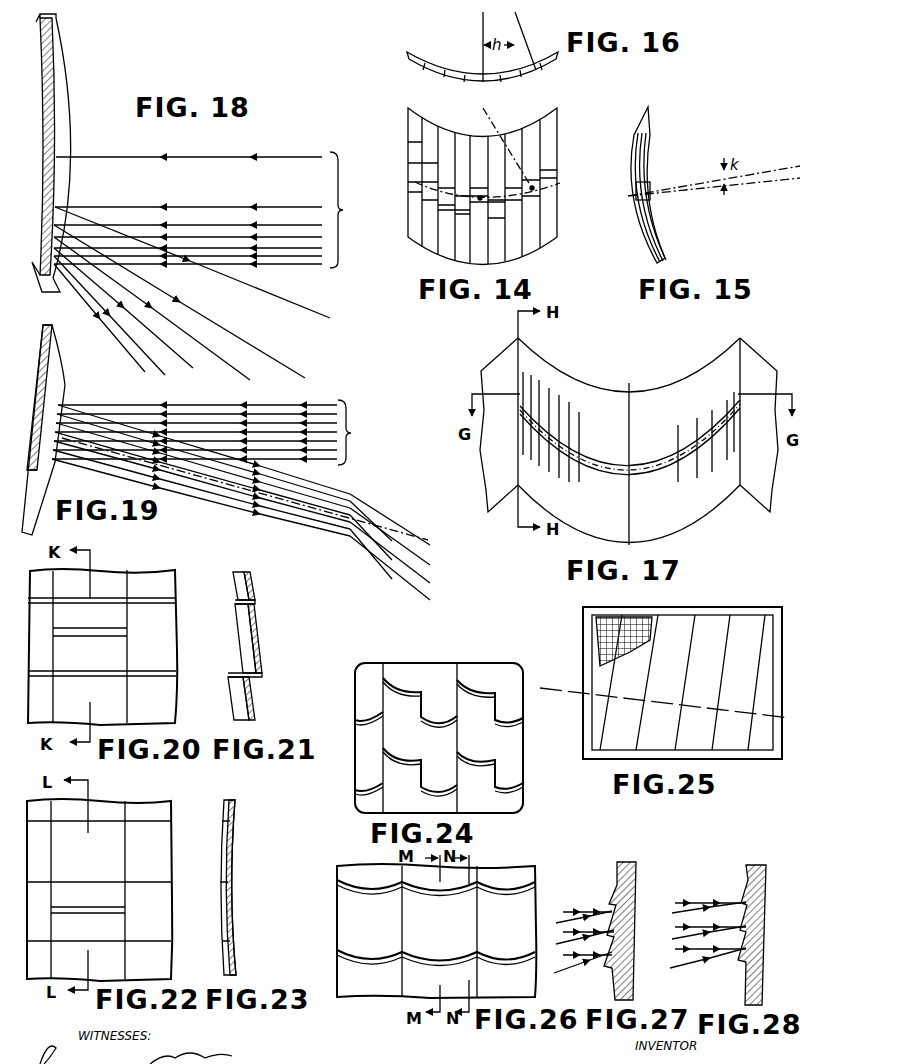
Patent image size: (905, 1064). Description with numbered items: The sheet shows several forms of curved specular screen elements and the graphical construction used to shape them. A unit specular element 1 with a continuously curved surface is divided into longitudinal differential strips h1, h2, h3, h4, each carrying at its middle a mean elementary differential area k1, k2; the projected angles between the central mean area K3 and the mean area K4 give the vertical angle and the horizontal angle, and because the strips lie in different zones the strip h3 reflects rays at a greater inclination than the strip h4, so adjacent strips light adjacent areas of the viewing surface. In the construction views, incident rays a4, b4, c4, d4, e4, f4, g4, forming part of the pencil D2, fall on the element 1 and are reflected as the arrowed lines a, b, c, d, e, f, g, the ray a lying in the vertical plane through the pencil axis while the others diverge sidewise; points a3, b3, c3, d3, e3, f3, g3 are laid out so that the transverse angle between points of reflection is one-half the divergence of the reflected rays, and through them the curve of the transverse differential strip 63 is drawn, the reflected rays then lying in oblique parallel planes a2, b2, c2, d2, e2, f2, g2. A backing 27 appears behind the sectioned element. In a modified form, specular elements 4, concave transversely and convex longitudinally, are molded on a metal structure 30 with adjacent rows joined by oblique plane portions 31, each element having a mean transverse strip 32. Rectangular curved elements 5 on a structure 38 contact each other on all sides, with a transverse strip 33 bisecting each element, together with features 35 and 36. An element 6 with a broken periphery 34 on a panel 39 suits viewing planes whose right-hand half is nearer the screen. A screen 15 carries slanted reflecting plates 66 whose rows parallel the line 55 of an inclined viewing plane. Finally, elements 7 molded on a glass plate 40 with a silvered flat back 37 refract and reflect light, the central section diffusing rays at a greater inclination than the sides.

In FIG. 18, the specular element 1 is at (68, 84).
In FIG. 19, the specular element 1 is at (66, 385).
In FIG. 16, the specular element 1 is at (430, 68).
In FIG. 14, the specular element 1 is at (420, 248).
In FIG. 15, the specular element 1 is at (650, 242).
In FIG. 17, the specular element 1 is at (700, 512).
In FIG. 25, the specular element 1 is at (636, 652).
In FIG. 18, the backing plate 27 is at (43, 126).
In FIG. 19, the transverse differential strip 63 is at (46, 452).
In FIG. 17, the transverse differential strip 63 is at (656, 472).
In FIG. 20, the metal structure 30 is at (142, 571).
In FIG. 21, the metal structure 30 is at (256, 626).
In FIG. 20, the joining portion 31 is at (88, 598).
In FIG. 20, the mean transverse differential strip 32 is at (102, 630).
In FIG. 20, the specular element 4 is at (135, 686).
In FIG. 21, the specular element 4 is at (234, 692).
In FIG. 22, the structure 38 is at (170, 808).
In FIG. 23, the structure 38 is at (237, 840).
In FIG. 22, the curved element 5 is at (99, 881).
In FIG. 23, the curved element 5 is at (225, 866).
In FIG. 22, the ridge 35 is at (80, 888).
In FIG. 22, the transverse differential strip 33 is at (92, 908).
In FIG. 22, the ridge 36 is at (84, 942).
In FIG. 24, the tile panel 39 is at (490, 663).
In FIG. 24, the step 34 is at (426, 712).
In FIG. 24, the element 6 is at (439, 737).
In FIG. 25, the screen 15 is at (715, 612).
In FIG. 25, the specularly reflecting plate 66 is at (672, 622).
In FIG. 25, the line 55 is at (563, 698).
In FIG. 26, the glass plate 40 is at (535, 880).
In FIG. 27, the glass plate 40 is at (646, 858).
In FIG. 28, the glass plate 40 is at (766, 856).
In FIG. 26, the element 7 is at (436, 917).
In FIG. 27, the element 7 is at (612, 898).
In FIG. 28, the element 7 is at (746, 896).
In FIG. 27, the back 37 is at (640, 922).
In FIG. 28, the back 37 is at (766, 922).
In FIG. 18, the pencil D2 is at (349, 210).
In FIG. 19, the pencil D2 is at (358, 432).
In FIG. 14, the longitudinal differential strip h1 is at (412, 142).
In FIG. 14, the longitudinal differential strip h2 is at (420, 163).
In FIG. 14, the longitudinal differential strip h3 is at (512, 163).
In FIG. 14, the longitudinal differential strip h4 is at (530, 142).
In FIG. 14, the differential area k1 is at (408, 182).
In FIG. 14, the differential area k2 is at (425, 193).
In FIG. 16, the central mean elementary area K3 is at (472, 76).
In FIG. 14, the central mean elementary area K3 is at (490, 212).
In FIG. 16, the mean elementary area K4 is at (533, 70).
In FIG. 14, the mean elementary area K4 is at (535, 190).
In FIG. 19, the oblique parallel plane a2 is at (252, 536).
In FIG. 19, the oblique parallel plane b2 is at (233, 521).
In FIG. 19, the oblique parallel plane c2 is at (253, 518).
In FIG. 19, the oblique parallel plane d2 is at (234, 503).
In FIG. 19, the oblique parallel plane e2 is at (254, 500).
In FIG. 19, the oblique parallel plane f2 is at (233, 485).
In FIG. 19, the oblique parallel plane g2 is at (255, 481).
In FIG. 17, the point of reflection a3 is at (628, 470).
In FIG. 17, the point of reflection b3 is at (582, 464).
In FIG. 17, the point of reflection c3 is at (574, 455).
In FIG. 17, the point of reflection d3 is at (562, 448).
In FIG. 17, the point of reflection e3 is at (550, 438).
In FIG. 17, the point of reflection f3 is at (540, 426).
In FIG. 17, the point of reflection g3 is at (530, 414).
In FIG. 18, the incident ray a4 is at (248, 157).
In FIG. 19, the incident ray a4 is at (327, 459).
In FIG. 18, the incident ray b4 is at (120, 207).
In FIG. 19, the incident ray b4 is at (287, 450).
In FIG. 18, the incident ray c4 is at (143, 225).
In FIG. 19, the incident ray c4 is at (249, 441).
In FIG. 18, the incident ray d4 is at (180, 237).
In FIG. 19, the incident ray d4 is at (211, 432).
In FIG. 18, the incident ray e4 is at (207, 248).
In FIG. 19, the incident ray e4 is at (174, 423).
In FIG. 18, the incident ray f4 is at (233, 256).
In FIG. 19, the incident ray f4 is at (140, 414).
In FIG. 18, the incident ray g4 is at (260, 264).
In FIG. 19, the incident ray g4 is at (110, 405).
In FIG. 18, the reflected ray a is at (200, 157).
In FIG. 19, the reflected ray a is at (242, 517).
In FIG. 18, the reflected ray b is at (280, 298).
In FIG. 19, the reflected ray b is at (257, 527).
In FIG. 18, the reflected ray c is at (250, 343).
In FIG. 19, the reflected ray c is at (273, 520).
In FIG. 18, the reflected ray d is at (218, 366).
In FIG. 19, the reflected ray d is at (291, 528).
In FIG. 18, the reflected ray e is at (165, 360).
In FIG. 19, the reflected ray e is at (309, 520).
In FIG. 18, the reflected ray f is at (106, 314).
In FIG. 19, the reflected ray f is at (324, 530).
In FIG. 18, the reflected ray g is at (110, 334).
In FIG. 19, the reflected ray g is at (342, 491).